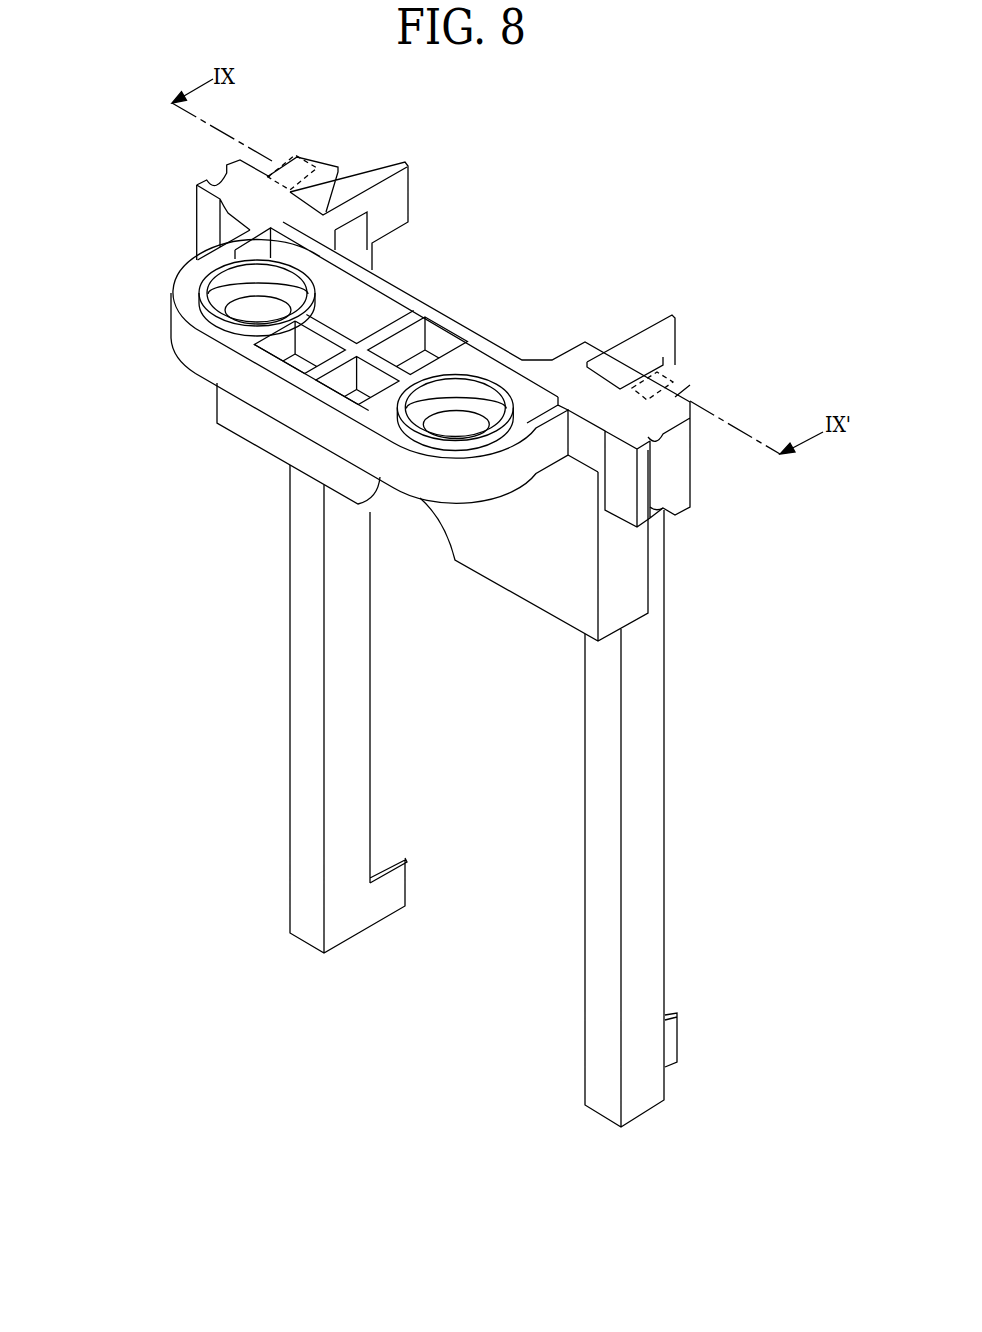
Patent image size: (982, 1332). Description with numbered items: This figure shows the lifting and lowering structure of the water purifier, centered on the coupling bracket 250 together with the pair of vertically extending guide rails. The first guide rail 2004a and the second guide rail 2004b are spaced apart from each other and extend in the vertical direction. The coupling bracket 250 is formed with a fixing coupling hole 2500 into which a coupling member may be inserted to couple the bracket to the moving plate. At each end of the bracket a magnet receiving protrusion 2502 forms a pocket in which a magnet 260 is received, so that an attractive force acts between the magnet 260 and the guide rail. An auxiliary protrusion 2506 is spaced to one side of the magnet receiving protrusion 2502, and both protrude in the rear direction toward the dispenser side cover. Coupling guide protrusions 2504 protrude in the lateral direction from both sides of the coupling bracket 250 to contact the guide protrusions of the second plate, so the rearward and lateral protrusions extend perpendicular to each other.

The coupling bracket 250 is at (399, 366).
The fixing coupling hole 2500 is at (237, 296).
The magnet receiving protrusion 2502 is at (279, 163).
The coupling guide protrusion 2504 is at (207, 183).
The auxiliary protrusion 2506 is at (347, 217).
The magnet 260 is at (303, 157).
The first guide rail 2004a is at (305, 748).
The second guide rail 2004b is at (605, 897).